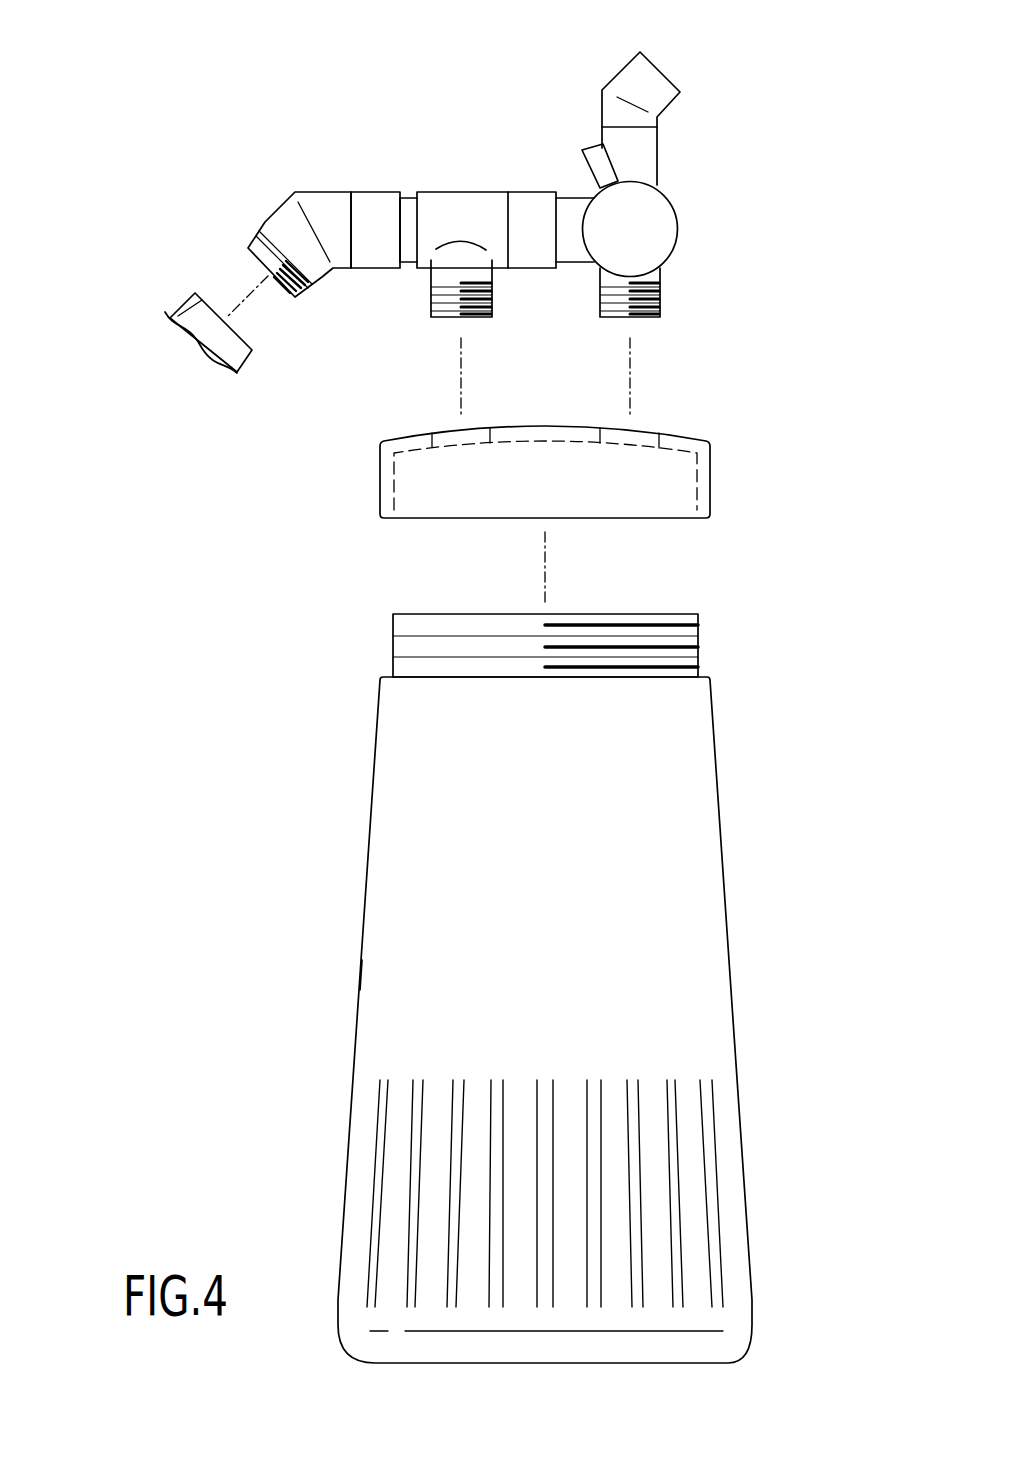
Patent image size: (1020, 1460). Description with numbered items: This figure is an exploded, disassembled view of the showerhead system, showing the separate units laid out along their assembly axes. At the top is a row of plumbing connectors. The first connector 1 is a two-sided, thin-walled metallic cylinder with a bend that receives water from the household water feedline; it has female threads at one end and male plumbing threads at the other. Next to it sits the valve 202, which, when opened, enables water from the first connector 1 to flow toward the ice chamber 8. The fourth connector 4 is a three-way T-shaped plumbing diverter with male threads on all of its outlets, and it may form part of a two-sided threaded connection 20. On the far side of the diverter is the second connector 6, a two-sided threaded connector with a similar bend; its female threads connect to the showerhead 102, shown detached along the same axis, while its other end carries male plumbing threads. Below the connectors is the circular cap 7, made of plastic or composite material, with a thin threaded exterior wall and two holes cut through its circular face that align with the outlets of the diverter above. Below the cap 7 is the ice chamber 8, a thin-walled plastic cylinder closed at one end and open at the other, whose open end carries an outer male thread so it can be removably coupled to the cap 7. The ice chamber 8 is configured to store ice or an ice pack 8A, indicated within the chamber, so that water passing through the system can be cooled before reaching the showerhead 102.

The first connector 1 is at (653, 78).
The two-sided threaded connection 20 is at (482, 172).
The fourth connector 4 is at (428, 205).
The second connector 6 is at (325, 198).
The showerhead 102 is at (193, 298).
The valve 202 is at (655, 237).
The cap 7 is at (407, 480).
The ice chamber 8 is at (392, 932).
The ice pack 8A is at (392, 992).